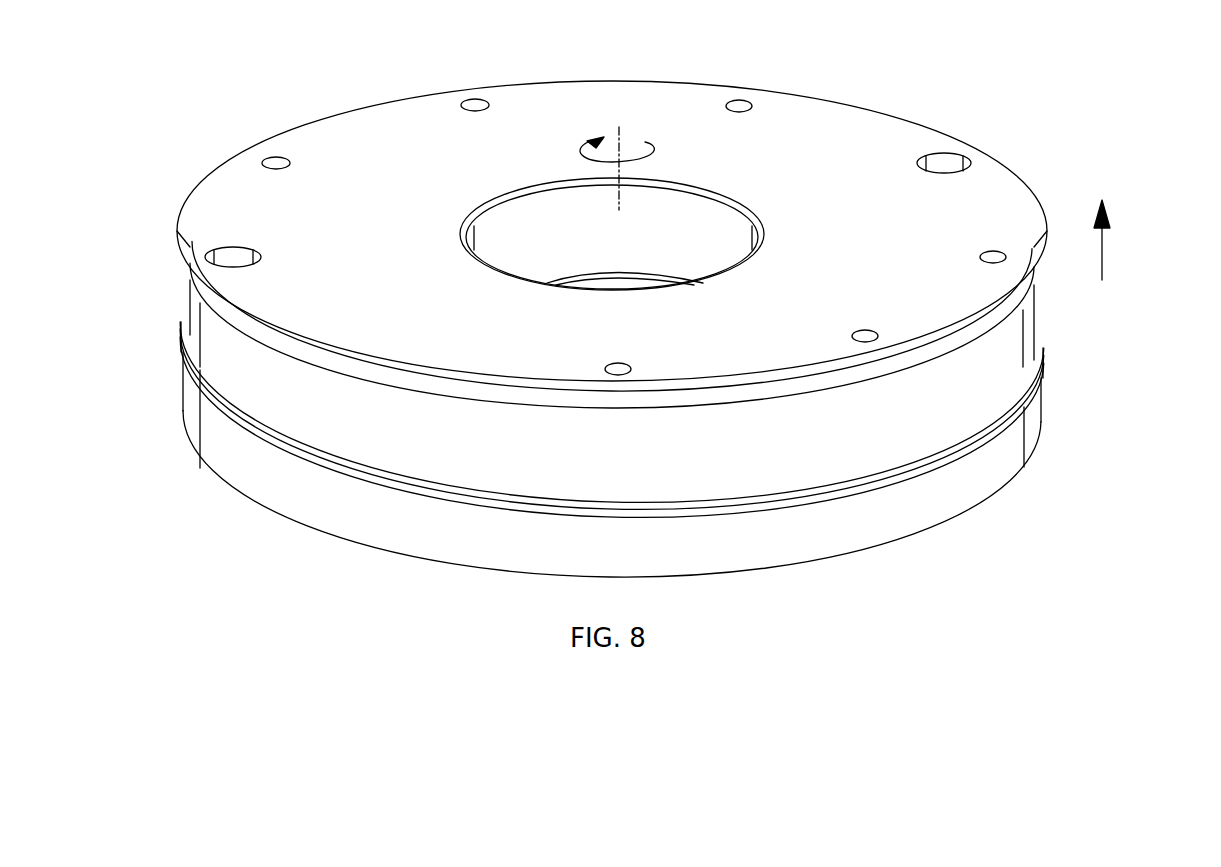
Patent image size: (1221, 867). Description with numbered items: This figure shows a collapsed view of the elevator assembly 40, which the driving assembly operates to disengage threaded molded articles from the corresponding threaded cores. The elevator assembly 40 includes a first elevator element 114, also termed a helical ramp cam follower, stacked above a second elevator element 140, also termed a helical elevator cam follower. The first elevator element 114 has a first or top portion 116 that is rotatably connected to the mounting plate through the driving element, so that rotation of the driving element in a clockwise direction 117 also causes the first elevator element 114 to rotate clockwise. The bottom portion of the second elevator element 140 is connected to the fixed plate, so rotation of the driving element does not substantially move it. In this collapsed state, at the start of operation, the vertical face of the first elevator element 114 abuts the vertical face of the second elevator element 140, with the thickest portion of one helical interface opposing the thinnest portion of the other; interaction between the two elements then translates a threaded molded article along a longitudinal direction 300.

The elevator assembly 40 is at (1049, 102).
The first elevator element 114 is at (553, 103).
The first portion 116 is at (862, 132).
The clockwise direction 117 is at (646, 143).
The second elevator element 140 is at (338, 504).
The longitudinal direction 300 is at (1102, 252).